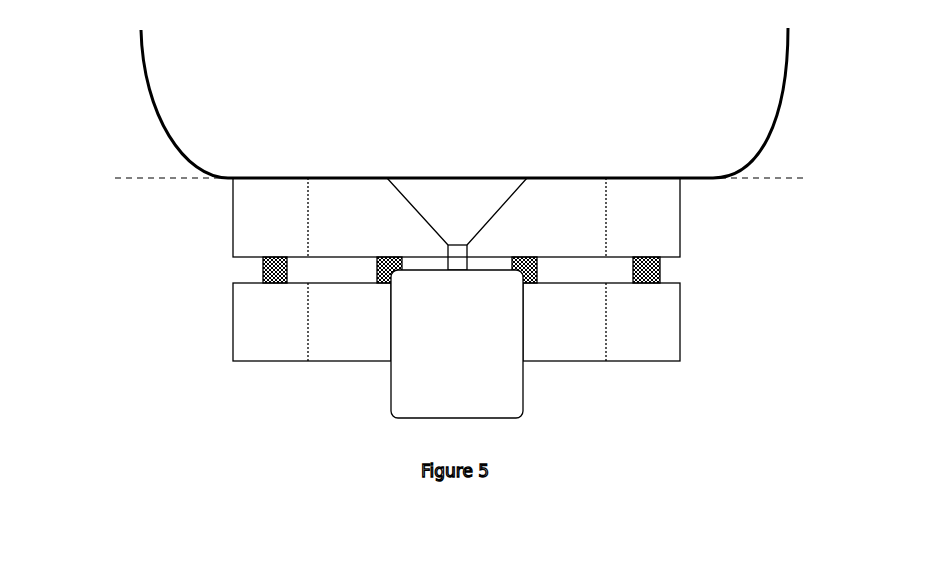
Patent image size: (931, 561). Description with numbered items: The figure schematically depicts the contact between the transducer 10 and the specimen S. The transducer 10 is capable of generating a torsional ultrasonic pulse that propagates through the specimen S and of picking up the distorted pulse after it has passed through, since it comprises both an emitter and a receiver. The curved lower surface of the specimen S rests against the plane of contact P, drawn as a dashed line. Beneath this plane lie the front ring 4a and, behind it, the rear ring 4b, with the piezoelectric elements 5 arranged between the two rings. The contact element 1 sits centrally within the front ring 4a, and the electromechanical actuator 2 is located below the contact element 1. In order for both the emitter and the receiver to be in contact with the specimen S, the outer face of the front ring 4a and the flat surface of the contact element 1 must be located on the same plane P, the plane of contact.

The transducer 10 is at (168, 360).
The contact element 1 is at (487, 205).
The electromechanical actuator 2 is at (512, 367).
The front ring 4a is at (655, 221).
The rear ring 4b is at (652, 322).
The piezoelectric elements 5 is at (259, 268).
The specimen S is at (191, 121).
The plane of contact P is at (468, 179).